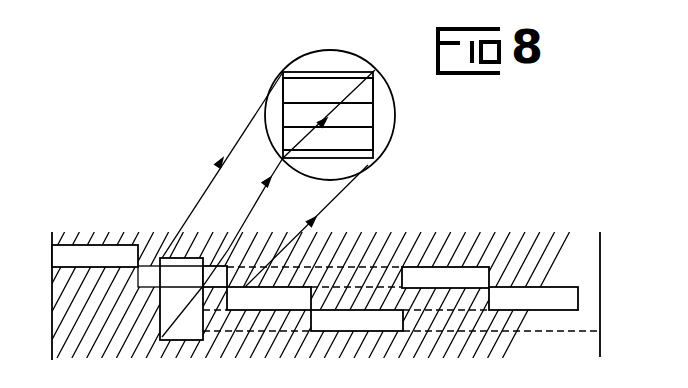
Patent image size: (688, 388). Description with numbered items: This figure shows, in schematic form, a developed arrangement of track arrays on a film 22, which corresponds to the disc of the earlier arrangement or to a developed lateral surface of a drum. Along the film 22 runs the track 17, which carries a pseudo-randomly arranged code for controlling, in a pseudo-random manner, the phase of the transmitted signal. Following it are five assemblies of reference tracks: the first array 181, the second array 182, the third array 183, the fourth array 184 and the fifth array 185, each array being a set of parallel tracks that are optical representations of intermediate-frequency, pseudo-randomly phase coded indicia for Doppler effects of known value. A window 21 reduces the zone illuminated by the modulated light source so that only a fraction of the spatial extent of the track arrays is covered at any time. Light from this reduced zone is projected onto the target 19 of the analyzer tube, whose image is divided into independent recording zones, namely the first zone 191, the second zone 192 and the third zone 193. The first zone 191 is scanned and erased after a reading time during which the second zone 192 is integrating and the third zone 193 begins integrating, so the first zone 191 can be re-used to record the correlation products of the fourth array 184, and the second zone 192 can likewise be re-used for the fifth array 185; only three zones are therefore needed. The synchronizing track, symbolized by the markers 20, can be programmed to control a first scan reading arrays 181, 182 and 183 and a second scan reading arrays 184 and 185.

The track 17 is at (95, 256).
The target of the analyzer tube 19 is at (288, 193).
The markers 20 is at (401, 261).
The window 21 is at (187, 257).
The film 22 is at (52, 279).
The first array of reference tracks 181 is at (215, 276).
The second code array 182 is at (269, 299).
The third code array 183 is at (357, 321).
The fourth array 184 is at (445, 277).
The fifth track array 185 is at (533, 298).
The first zone of the target 191 is at (328, 92).
The second zone of the target 192 is at (328, 116).
The third zone of the target 193 is at (328, 139).